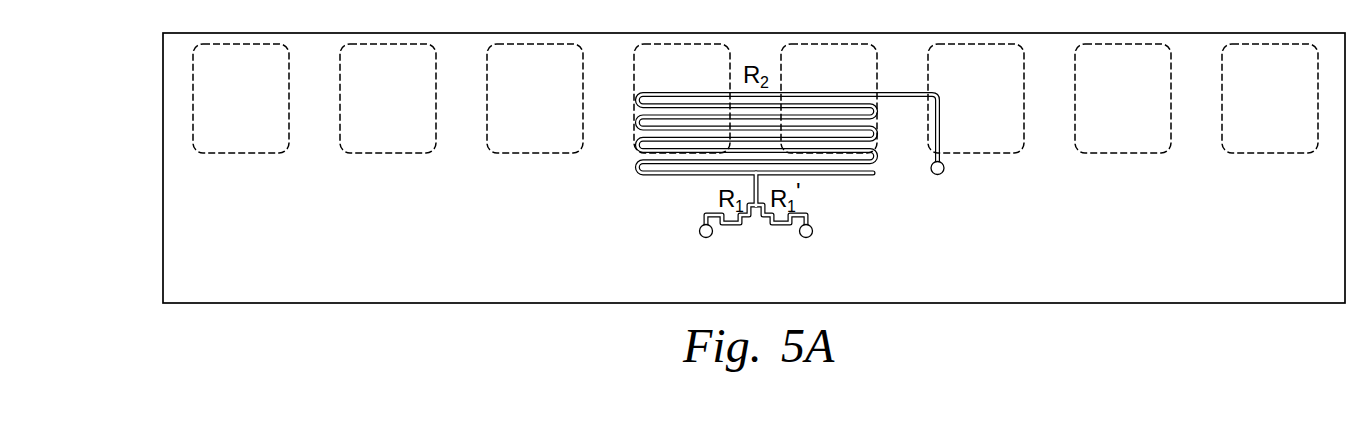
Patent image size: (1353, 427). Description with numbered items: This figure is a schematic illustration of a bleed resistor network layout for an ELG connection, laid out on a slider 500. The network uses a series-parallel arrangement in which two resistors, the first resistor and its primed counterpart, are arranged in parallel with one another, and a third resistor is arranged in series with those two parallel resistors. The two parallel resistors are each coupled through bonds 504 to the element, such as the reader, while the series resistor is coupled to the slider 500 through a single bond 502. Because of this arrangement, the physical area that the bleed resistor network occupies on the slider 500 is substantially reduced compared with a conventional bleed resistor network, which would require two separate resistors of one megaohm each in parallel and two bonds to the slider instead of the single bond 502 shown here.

The slider 500 is at (1275, 33).
The bond 502 is at (942, 173).
The bonds 504 is at (703, 236).